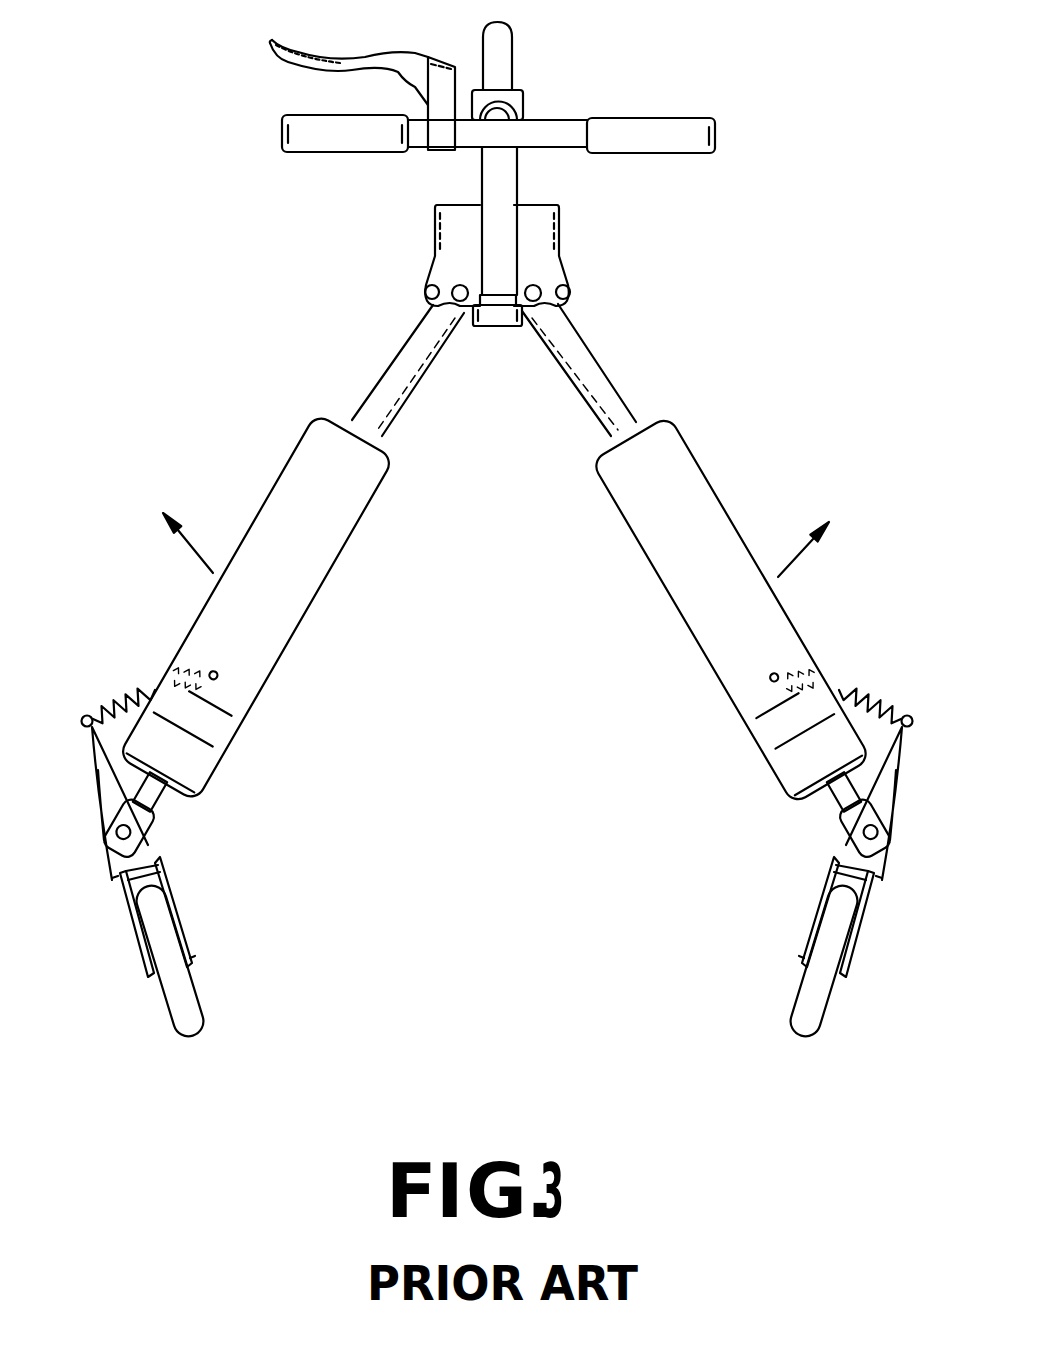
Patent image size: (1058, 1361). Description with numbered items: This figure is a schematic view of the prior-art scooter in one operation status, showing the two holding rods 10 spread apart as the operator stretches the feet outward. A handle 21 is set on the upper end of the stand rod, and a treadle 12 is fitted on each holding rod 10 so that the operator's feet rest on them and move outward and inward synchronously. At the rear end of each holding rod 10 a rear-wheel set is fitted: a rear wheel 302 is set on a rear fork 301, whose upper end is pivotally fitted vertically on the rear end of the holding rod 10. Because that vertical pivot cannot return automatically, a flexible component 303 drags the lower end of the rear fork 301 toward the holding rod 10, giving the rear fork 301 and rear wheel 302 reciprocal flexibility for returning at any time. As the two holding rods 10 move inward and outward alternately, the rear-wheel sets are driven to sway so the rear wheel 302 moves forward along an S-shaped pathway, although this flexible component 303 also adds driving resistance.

The handle 21 is at (535, 130).
The holding rod 10 is at (370, 405).
The treadle 12 is at (205, 622).
The flexible component 303 is at (148, 707).
The rear fork 301 is at (175, 913).
The rear wheel 302 is at (187, 982).